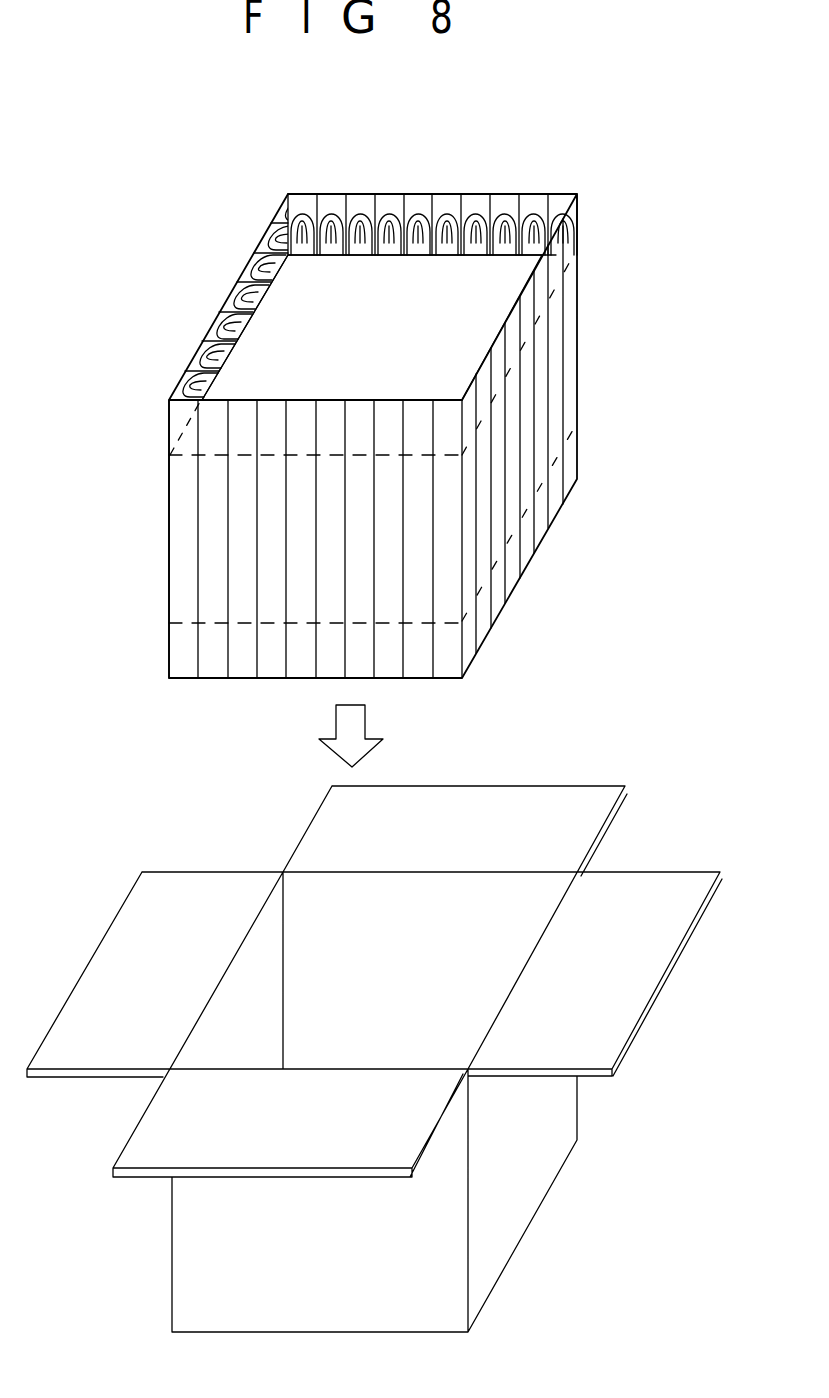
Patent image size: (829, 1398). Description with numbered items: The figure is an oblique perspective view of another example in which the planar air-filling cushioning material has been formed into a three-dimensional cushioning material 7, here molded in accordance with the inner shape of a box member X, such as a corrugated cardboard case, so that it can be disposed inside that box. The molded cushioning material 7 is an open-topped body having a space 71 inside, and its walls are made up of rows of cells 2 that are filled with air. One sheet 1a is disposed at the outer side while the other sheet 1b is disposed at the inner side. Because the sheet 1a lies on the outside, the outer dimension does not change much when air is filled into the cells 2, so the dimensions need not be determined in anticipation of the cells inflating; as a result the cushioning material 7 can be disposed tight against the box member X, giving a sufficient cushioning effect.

The cells 2 is at (332, 222).
The three-dimensional cushioning material 7 is at (403, 427).
The space 71 is at (438, 315).
The sheet 1a is at (185, 525).
The other sheet 1b is at (188, 373).
The box member X is at (200, 898).